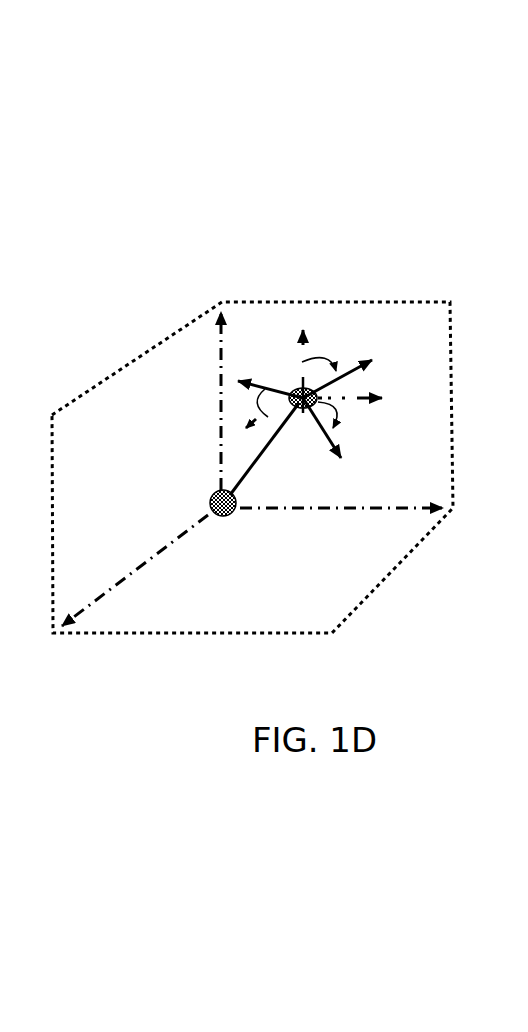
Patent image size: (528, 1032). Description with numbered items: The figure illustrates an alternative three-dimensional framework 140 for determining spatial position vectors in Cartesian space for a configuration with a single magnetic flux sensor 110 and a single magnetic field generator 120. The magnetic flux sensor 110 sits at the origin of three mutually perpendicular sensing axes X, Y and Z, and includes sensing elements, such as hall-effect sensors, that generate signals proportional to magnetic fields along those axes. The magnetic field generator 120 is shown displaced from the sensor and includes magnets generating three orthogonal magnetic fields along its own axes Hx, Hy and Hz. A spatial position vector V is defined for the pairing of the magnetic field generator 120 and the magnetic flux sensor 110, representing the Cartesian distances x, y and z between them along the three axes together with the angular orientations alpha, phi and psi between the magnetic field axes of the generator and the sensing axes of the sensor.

The 3-dimensional framework 140 is at (208, 116).
The magnetic field generator 120 is at (289, 380).
The magnetic flux sensor 110 is at (237, 577).